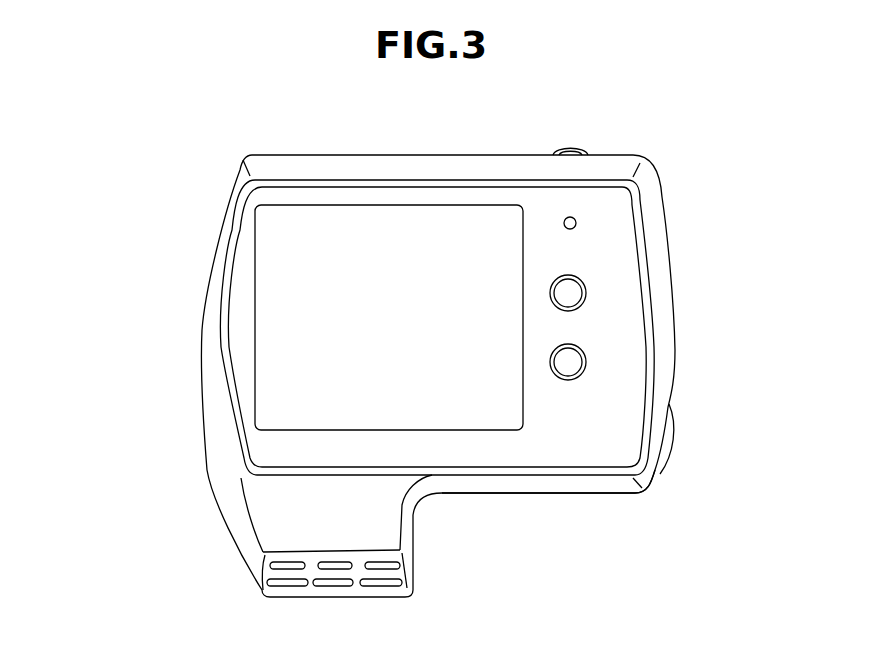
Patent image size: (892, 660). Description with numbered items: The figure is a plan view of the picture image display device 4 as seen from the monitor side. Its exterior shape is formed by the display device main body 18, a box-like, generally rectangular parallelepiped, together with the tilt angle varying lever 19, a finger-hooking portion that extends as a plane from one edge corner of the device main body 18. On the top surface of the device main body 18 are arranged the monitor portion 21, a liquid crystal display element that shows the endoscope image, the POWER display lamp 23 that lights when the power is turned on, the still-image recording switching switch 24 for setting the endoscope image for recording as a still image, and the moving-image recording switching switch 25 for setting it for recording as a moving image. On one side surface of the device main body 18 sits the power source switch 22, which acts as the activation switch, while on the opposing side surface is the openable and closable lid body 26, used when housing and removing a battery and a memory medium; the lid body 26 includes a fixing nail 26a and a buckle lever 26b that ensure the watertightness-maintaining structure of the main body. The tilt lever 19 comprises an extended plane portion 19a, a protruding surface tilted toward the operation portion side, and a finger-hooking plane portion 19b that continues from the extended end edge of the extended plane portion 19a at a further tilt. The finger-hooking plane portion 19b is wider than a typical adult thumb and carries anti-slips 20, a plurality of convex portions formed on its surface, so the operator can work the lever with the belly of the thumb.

The picture image display device 4 is at (479, 139).
The display device main body 18 is at (673, 386).
The tilt angle varying lever 19 is at (140, 505).
The extended plane portion 19a is at (280, 523).
The finger-hooking plane portion 19b is at (262, 592).
The anti-slips 20 is at (400, 611).
The monitor portion 21 is at (374, 225).
The power source switch 22 is at (572, 147).
The POWER display lamp 23 is at (573, 216).
The still-image recording switching switch 24 is at (566, 289).
The moving-image recording switching switch 25 is at (566, 358).
The lid body 26 is at (586, 497).
The fixing nail 26a is at (656, 480).
The buckle lever 26b is at (674, 433).